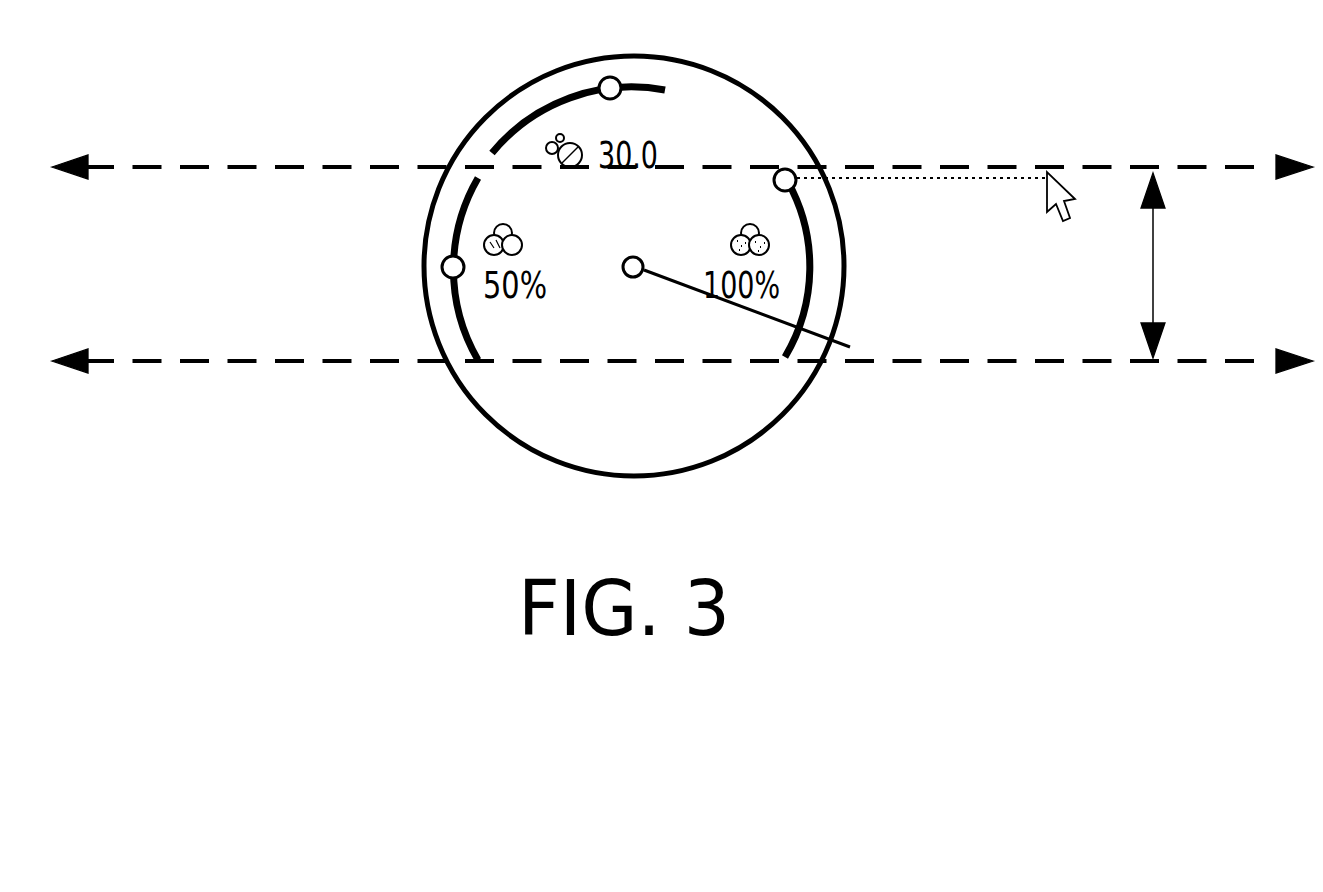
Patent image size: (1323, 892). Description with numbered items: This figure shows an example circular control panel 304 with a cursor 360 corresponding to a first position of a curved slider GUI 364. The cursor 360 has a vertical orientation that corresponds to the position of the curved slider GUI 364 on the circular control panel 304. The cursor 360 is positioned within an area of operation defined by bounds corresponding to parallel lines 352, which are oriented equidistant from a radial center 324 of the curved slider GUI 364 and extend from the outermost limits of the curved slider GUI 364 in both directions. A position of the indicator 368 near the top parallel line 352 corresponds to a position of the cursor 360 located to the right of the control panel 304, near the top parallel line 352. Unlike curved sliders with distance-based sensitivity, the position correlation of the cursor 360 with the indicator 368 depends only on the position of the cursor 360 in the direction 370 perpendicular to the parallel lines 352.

The circular control panel 304 is at (433, 330).
The radial center 324 is at (850, 347).
The parallel lines 352 is at (147, 167).
The cursor 360 is at (1062, 170).
The curved slider GUI 364 is at (790, 345).
The indicator 368 is at (797, 170).
The direction 370 is at (1153, 307).